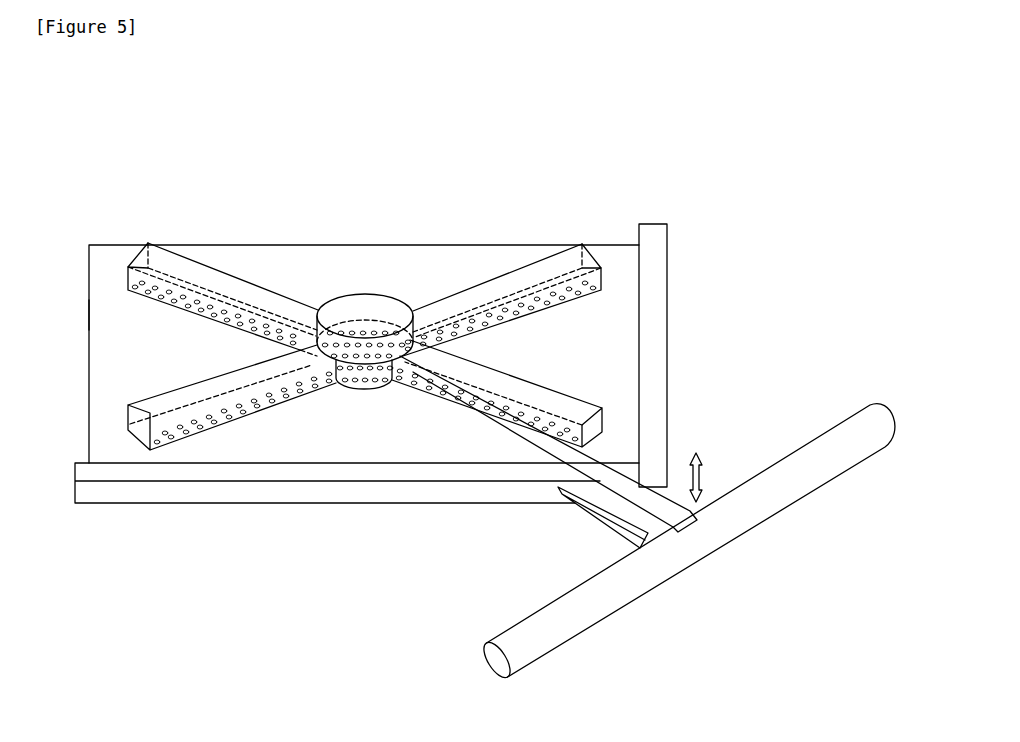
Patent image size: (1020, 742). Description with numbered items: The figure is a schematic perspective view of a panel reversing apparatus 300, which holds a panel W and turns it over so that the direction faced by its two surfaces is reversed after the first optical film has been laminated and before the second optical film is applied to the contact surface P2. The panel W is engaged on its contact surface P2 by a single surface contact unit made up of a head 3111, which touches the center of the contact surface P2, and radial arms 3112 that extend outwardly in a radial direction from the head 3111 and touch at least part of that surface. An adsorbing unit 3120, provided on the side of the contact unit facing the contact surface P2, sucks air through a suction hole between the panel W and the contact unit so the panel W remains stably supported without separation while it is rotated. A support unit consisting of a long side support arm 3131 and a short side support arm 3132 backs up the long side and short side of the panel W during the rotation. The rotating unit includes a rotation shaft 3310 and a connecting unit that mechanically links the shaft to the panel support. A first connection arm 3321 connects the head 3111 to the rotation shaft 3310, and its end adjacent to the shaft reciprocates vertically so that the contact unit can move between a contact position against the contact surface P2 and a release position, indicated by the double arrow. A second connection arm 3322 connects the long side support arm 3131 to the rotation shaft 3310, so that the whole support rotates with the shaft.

The panel reversing apparatus 300 is at (463, 440).
The panel W is at (84, 240).
The contact surface P2 is at (112, 314).
The head 3111 is at (354, 303).
The radial arms 3112 is at (438, 302).
The adsorbing unit 3120 is at (363, 392).
The long side support arm 3131 is at (235, 490).
The short side support arm 3132 is at (663, 295).
The rotation shaft 3310 is at (843, 433).
The first connection arm 3321 is at (647, 502).
The second connection arm 3322 is at (603, 518).